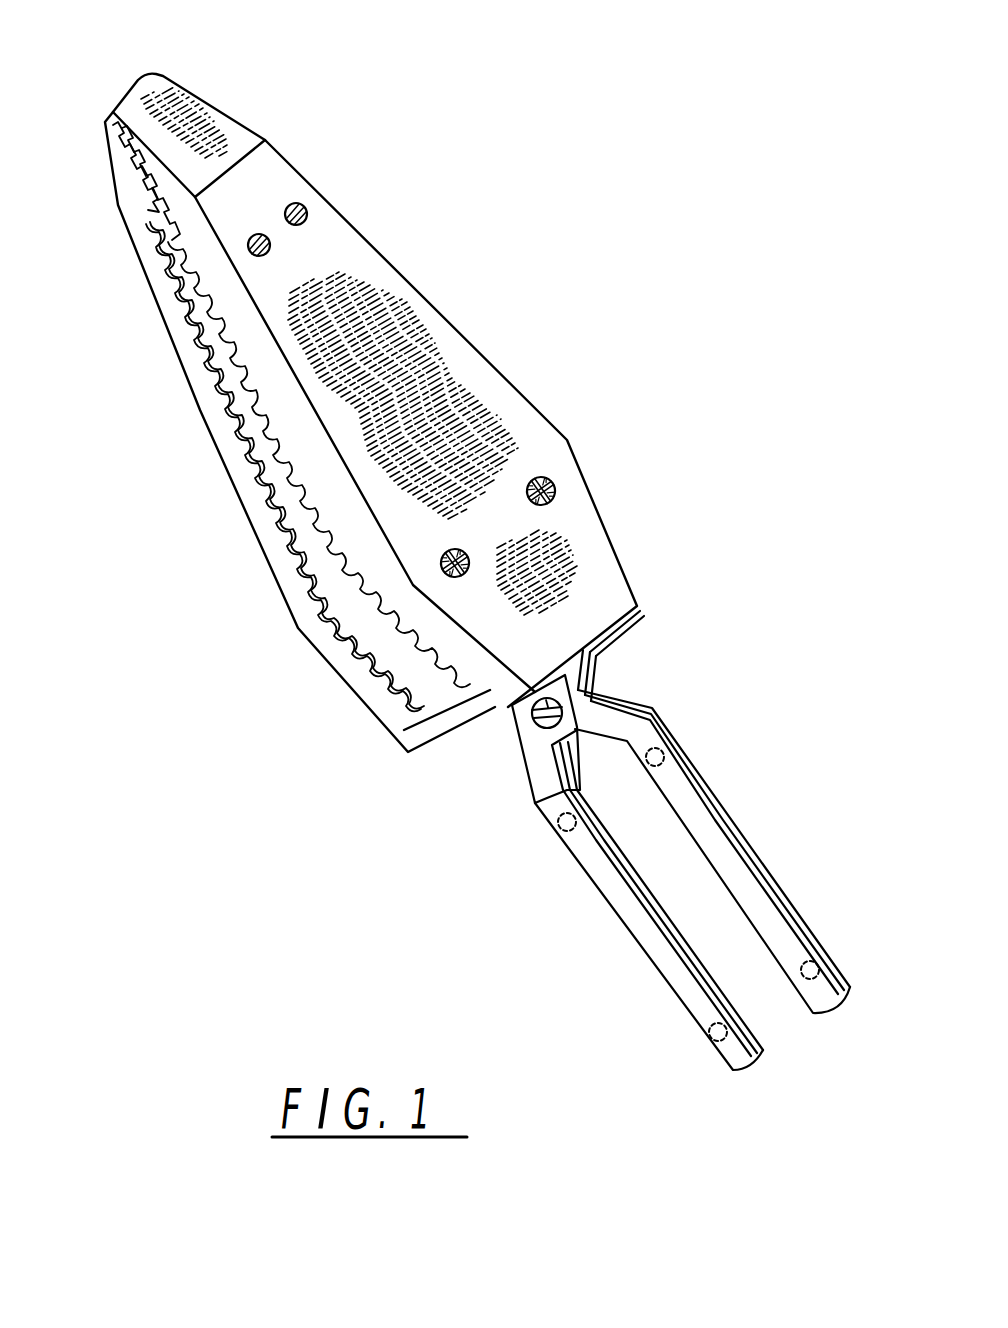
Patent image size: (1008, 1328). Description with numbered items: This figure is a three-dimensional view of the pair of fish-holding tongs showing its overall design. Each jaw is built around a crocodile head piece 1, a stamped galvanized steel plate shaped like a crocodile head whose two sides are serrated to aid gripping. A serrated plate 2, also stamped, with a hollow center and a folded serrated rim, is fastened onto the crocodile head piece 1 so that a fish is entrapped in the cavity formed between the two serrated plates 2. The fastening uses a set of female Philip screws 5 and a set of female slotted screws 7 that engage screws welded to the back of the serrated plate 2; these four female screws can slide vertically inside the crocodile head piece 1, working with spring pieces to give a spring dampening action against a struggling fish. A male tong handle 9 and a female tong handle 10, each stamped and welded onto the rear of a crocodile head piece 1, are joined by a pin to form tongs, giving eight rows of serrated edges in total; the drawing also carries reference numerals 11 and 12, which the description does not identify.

The crocodile head piece 1 is at (378, 251).
The serrated plate 2 is at (323, 563).
The female Philip screws 5 is at (457, 552).
The female slotted screws 7 is at (252, 238).
The male tong handle 9 is at (410, 757).
The female tong handle 10 is at (753, 537).
The fastening pin 11 is at (883, 910).
The pivot pin 12 is at (540, 720).